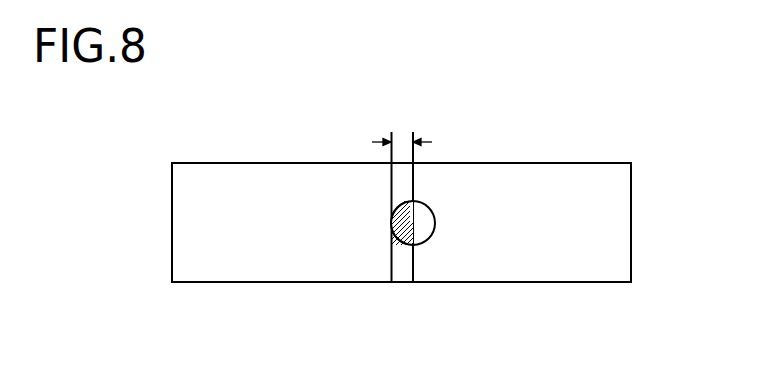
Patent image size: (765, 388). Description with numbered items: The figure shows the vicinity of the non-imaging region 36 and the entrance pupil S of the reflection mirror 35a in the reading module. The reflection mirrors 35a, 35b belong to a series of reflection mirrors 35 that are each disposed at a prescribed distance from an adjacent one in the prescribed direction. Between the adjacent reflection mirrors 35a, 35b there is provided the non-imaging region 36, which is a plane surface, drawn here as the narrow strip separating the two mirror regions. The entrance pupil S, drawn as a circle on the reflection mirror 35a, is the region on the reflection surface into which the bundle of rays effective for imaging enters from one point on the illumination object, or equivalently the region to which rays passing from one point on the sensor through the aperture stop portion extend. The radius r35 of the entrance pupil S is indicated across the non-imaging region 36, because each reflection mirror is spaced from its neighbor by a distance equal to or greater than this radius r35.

The reflection mirror 35 is at (620, 225).
The reflection mirror 35a is at (520, 258).
The reflection mirror 35b is at (278, 258).
The non-imaging region 36 is at (403, 258).
The radius of entrance pupil r35 is at (402, 124).
The entrance pupil S is at (427, 203).